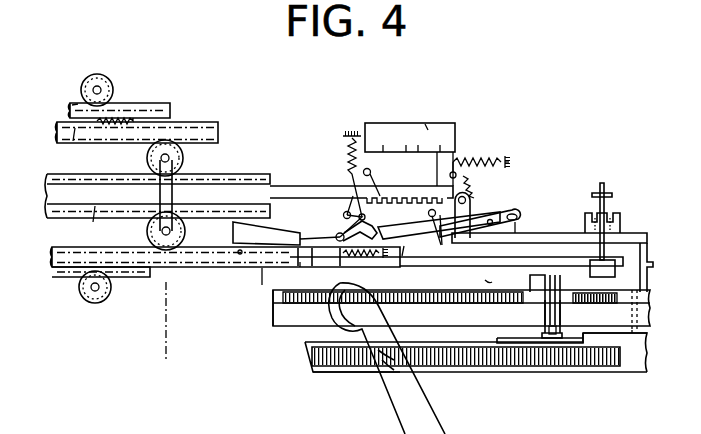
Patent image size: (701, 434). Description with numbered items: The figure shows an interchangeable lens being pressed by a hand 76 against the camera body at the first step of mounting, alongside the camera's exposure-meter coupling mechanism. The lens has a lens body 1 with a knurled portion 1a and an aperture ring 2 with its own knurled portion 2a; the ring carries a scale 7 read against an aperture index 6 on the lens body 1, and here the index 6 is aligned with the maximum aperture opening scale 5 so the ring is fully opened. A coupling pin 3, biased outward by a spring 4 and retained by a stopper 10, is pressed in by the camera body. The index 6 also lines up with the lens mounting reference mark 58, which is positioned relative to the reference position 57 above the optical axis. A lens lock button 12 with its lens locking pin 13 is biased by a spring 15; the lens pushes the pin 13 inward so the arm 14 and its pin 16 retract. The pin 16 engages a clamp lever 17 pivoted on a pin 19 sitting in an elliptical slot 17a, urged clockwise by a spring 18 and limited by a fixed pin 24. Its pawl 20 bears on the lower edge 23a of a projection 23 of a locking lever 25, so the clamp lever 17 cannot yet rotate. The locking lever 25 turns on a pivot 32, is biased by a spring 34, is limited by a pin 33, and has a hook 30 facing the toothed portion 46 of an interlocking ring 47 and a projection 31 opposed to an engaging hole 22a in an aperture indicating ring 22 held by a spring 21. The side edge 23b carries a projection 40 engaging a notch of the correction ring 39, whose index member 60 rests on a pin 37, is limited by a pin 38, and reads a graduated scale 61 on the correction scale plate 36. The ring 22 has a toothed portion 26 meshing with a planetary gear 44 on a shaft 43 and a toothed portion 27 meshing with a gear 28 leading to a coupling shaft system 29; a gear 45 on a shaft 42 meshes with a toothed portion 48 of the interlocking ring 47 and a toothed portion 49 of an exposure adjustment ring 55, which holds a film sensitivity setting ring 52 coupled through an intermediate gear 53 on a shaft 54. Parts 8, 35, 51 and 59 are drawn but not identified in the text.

The lens body 1 is at (634, 373).
The knurled portion 1a is at (565, 366).
The aperture ring 2 is at (290, 312).
The knurled portion 2a is at (272, 302).
The coupling pin 3 is at (550, 275).
The spring 4 is at (556, 305).
The maximum aperture opening scale 5 is at (497, 326).
The aperture index 6 is at (452, 367).
The scale 7 is at (571, 333).
The post 8 is at (544, 309).
The stopper 10 is at (568, 317).
The lens lock button 12 is at (612, 268).
The lens locking pin 13 is at (640, 283).
The arm 14 is at (569, 240).
The spring 15 is at (612, 218).
The pin 16 is at (472, 200).
The clamp lever 17 is at (503, 230).
The elliptical slot 17a is at (515, 225).
The spring 18 is at (484, 184).
The pin 19 is at (518, 214).
The pawl 20 is at (396, 236).
The spring 21 is at (365, 257).
The aperture indicating ring 22 is at (262, 286).
The engaging hole 22a is at (300, 268).
The projection 23 is at (370, 233).
The lower edge 23a is at (403, 257).
The side edge 23b is at (380, 212).
The fixed pin 24 is at (442, 222).
The locking lever 25 is at (302, 235).
The toothed portion 26 is at (60, 247).
The toothed portion 27 is at (75, 278).
The gear 28 is at (111, 290).
The coupling shaft system 29 is at (95, 291).
The hook 30 is at (238, 254).
The projection 31 is at (297, 254).
The pivot 32 is at (339, 233).
The pin 33 is at (346, 212).
The spring 34 is at (350, 145).
The spring anchor 35 is at (480, 160).
The correction scale plate 36 is at (437, 123).
The pin 37 is at (480, 152).
The pin 38 is at (371, 172).
The correction ring 39 is at (305, 196).
The projection 40 is at (385, 183).
The shaft 42 is at (183, 158).
The shaft 43 is at (147, 231).
The planetary gear 44 is at (158, 200).
The gear 45 is at (147, 158).
The toothed portion 46 is at (47, 212).
The interlocking ring 47 is at (94, 226).
The toothed portion 48 is at (246, 176).
The toothed portion 49 is at (73, 141).
The bar end 51 is at (75, 104).
The film sensitivity setting ring 52 is at (163, 103).
The intermediate gear 53 is at (111, 87).
The shaft 54 is at (96, 87).
The exposure adjustment ring 55 is at (201, 122).
The reference position 57 is at (167, 298).
The lens mounting reference mark 58 is at (485, 280).
The pin 59 is at (455, 136).
The index member 60 is at (436, 170).
The graduated scales 61 is at (425, 124).
The hand 76 is at (375, 378).